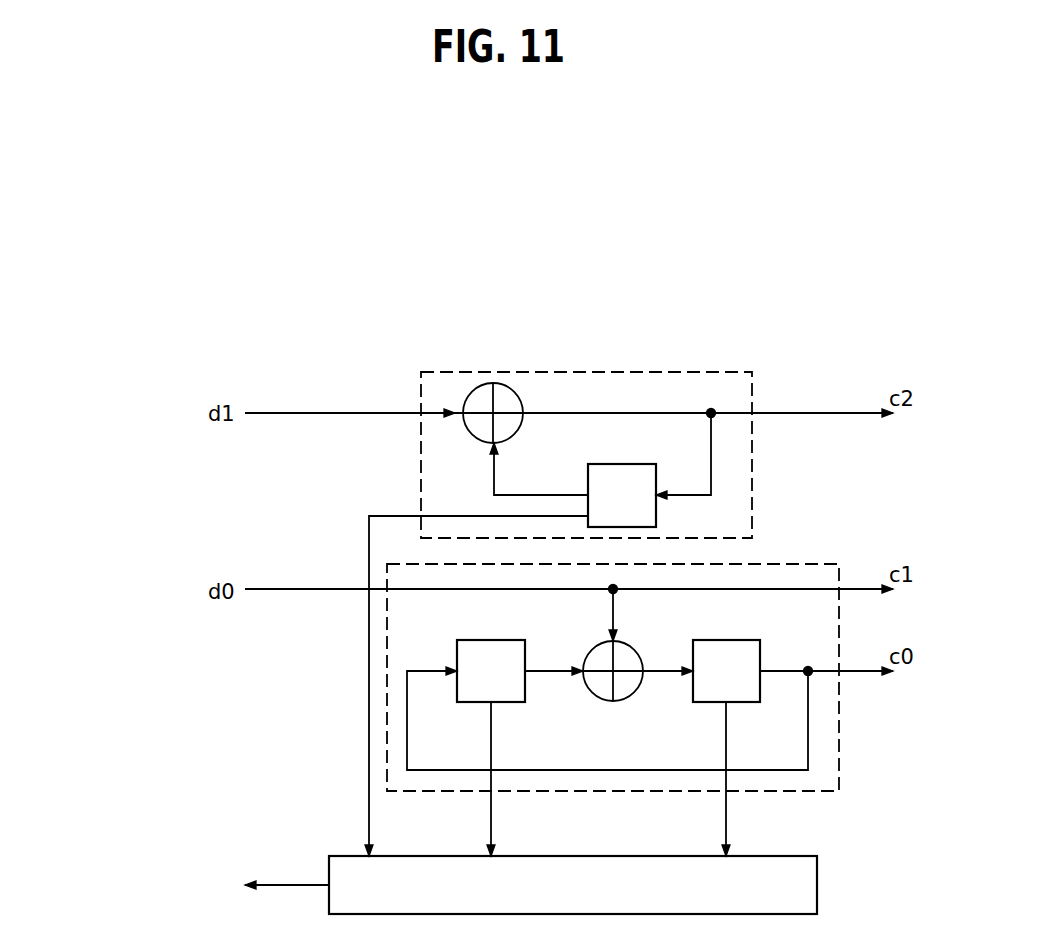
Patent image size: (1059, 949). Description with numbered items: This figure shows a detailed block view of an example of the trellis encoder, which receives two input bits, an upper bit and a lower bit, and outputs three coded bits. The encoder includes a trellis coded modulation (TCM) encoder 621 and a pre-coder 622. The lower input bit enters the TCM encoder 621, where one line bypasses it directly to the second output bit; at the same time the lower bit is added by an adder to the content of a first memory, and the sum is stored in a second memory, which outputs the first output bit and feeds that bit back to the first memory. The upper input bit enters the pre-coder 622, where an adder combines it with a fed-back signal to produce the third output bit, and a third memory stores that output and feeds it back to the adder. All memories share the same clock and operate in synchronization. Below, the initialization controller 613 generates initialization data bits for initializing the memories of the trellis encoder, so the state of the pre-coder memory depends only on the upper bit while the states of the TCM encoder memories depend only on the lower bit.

The initialization controller 613 is at (817, 883).
The trellis coded modulation (TCM) encoder 621 is at (803, 563).
The pre-coder 622 is at (608, 372).